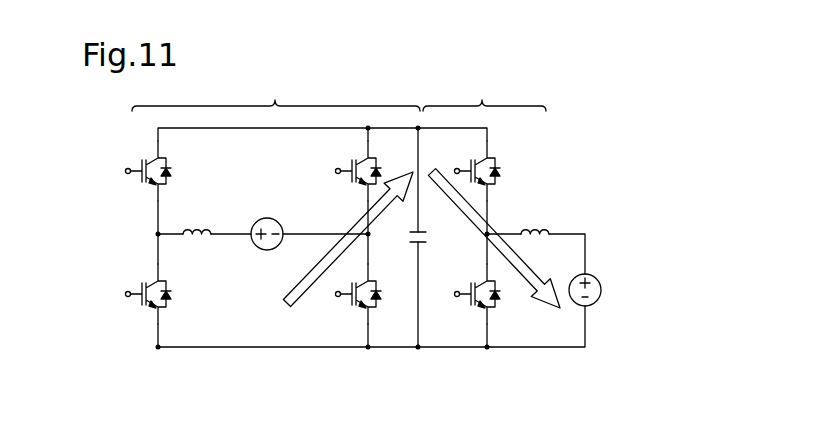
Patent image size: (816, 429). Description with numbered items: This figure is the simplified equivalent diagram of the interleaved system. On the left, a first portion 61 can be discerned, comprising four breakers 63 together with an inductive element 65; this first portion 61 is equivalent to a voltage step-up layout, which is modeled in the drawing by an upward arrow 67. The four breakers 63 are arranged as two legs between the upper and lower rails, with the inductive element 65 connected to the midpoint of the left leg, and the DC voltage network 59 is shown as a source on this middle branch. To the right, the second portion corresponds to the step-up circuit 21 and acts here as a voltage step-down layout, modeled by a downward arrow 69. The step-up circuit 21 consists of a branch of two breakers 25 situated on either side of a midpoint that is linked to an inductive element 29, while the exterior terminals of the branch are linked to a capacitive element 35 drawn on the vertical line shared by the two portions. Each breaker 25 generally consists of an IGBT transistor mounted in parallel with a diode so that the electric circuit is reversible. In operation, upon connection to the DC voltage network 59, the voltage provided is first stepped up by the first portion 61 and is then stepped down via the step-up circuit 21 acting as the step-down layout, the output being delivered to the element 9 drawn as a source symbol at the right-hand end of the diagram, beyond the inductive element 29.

The first portion 61 is at (276, 91).
The step-up circuit 21 is at (484, 91).
The breakers 63 is at (130, 149).
The breakers 25 is at (512, 158).
The inductive element 65 is at (196, 222).
The DC voltage network 59 is at (254, 244).
The capacitive element 35 is at (417, 252).
The inductive element 29 is at (548, 228).
The battery / voltage source 9 is at (602, 290).
The upward arrow 67 is at (286, 290).
The downward arrow 69 is at (440, 212).